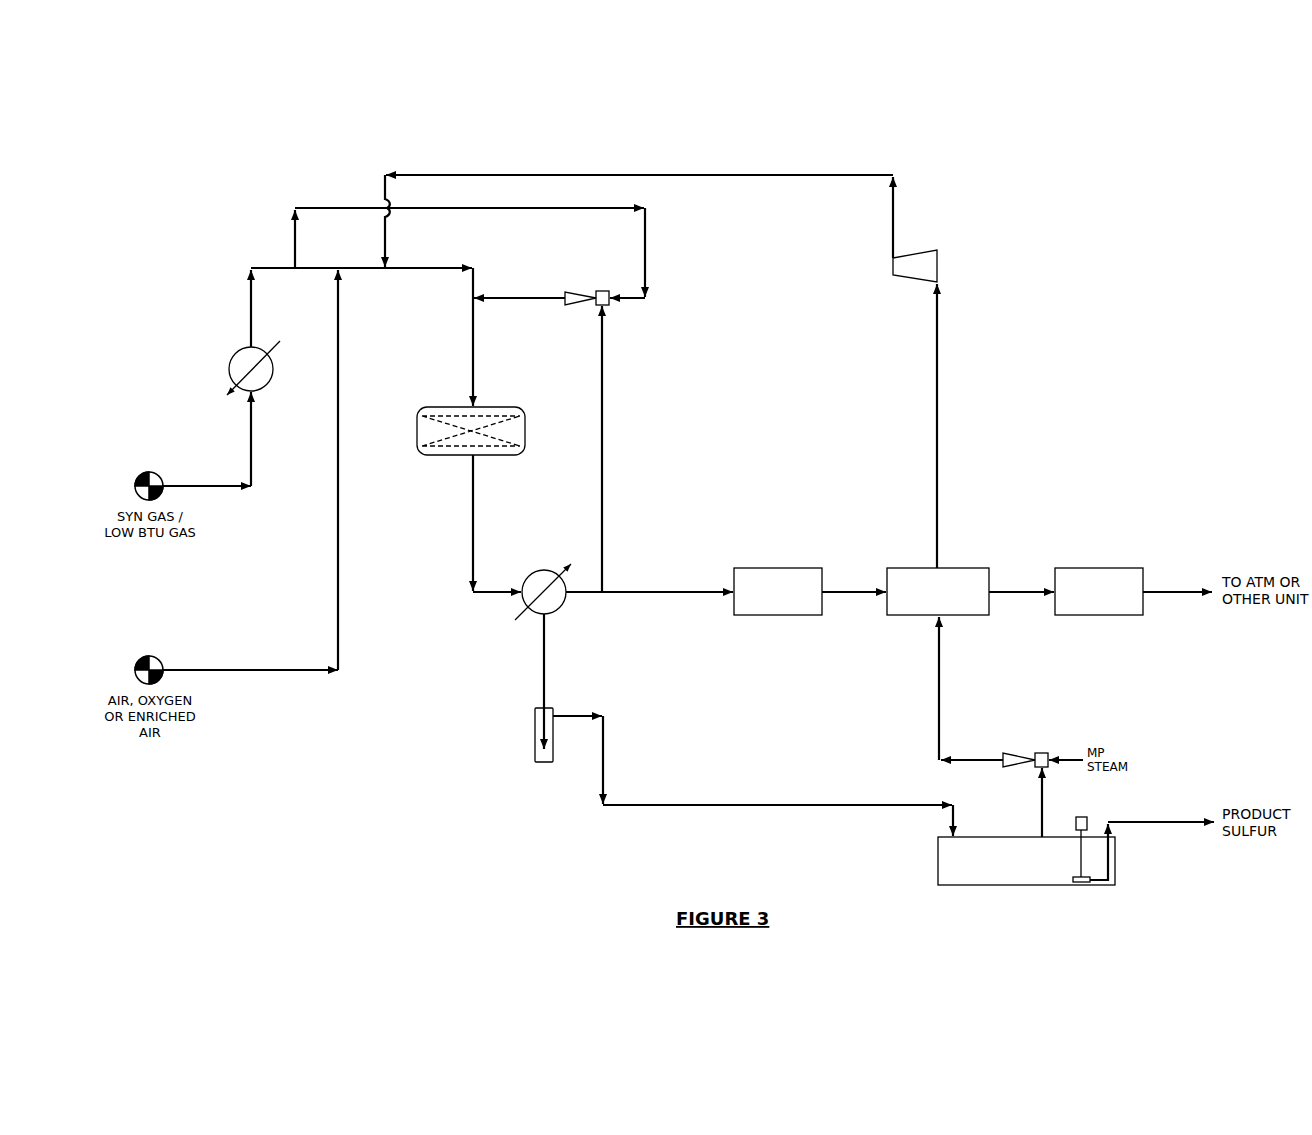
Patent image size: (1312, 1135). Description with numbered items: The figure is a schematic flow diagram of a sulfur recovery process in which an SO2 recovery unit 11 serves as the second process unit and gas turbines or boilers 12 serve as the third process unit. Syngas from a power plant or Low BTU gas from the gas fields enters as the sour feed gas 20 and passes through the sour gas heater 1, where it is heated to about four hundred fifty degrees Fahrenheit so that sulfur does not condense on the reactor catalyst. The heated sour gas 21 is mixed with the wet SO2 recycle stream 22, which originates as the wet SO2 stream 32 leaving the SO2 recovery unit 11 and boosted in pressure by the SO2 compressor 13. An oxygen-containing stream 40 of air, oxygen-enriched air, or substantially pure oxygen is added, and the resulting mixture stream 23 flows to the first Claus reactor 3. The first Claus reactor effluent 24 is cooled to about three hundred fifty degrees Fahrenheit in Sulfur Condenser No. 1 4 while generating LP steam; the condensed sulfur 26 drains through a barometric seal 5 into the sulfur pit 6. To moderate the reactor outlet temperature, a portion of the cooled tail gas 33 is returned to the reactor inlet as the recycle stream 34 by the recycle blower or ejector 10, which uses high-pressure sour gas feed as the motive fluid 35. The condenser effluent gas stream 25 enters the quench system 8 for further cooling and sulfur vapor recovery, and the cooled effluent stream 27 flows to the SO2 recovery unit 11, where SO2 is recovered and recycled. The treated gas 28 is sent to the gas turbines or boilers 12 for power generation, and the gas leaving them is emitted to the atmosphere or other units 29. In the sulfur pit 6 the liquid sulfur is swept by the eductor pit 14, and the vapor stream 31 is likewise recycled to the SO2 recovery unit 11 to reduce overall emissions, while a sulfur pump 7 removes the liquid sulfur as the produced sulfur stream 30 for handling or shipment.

The sour gas heater 1 is at (233, 351).
The first Claus reactor 3 is at (424, 405).
The Sulfur Condenser No. 1 4 is at (527, 575).
The barometric seal 5 is at (532, 719).
The sulfur pit 6 is at (1009, 835).
The sulfur pump 7 is at (1075, 816).
The quench system 8 is at (738, 567).
The recycle blower or ejector 10 is at (568, 292).
The SO2 recovery unit 11 is at (895, 567).
The gas turbines or boilers 12 is at (1057, 567).
The SO2 Compressor 13 is at (938, 250).
The eductor pit 14 is at (1000, 752).
The sour feed gas 20 is at (251, 456).
The heated sour gas 21 is at (251, 316).
The SO2 recycle stream 22 is at (513, 174).
The mixture stream 23 is at (473, 361).
The first Claus reactor effluent 24 is at (473, 501).
The condenser No. 1 effluent gas stream 25 is at (676, 593).
The condensed sulfur 26 is at (603, 748).
The cooled effluent stream 27 is at (867, 593).
The treated gas 28 is at (1027, 593).
The gas emitted to atmosphere or other units 29 is at (1172, 593).
The produced sulfur stream 30 is at (1160, 822).
The vapor stream 31 is at (939, 683).
The wet SO2 stream 32 is at (937, 373).
The cooled tail gas 33 is at (602, 496).
The recycle stream 34 is at (512, 295).
The motive fluid 35 is at (645, 258).
The oxygen-containing stream 40 is at (338, 629).